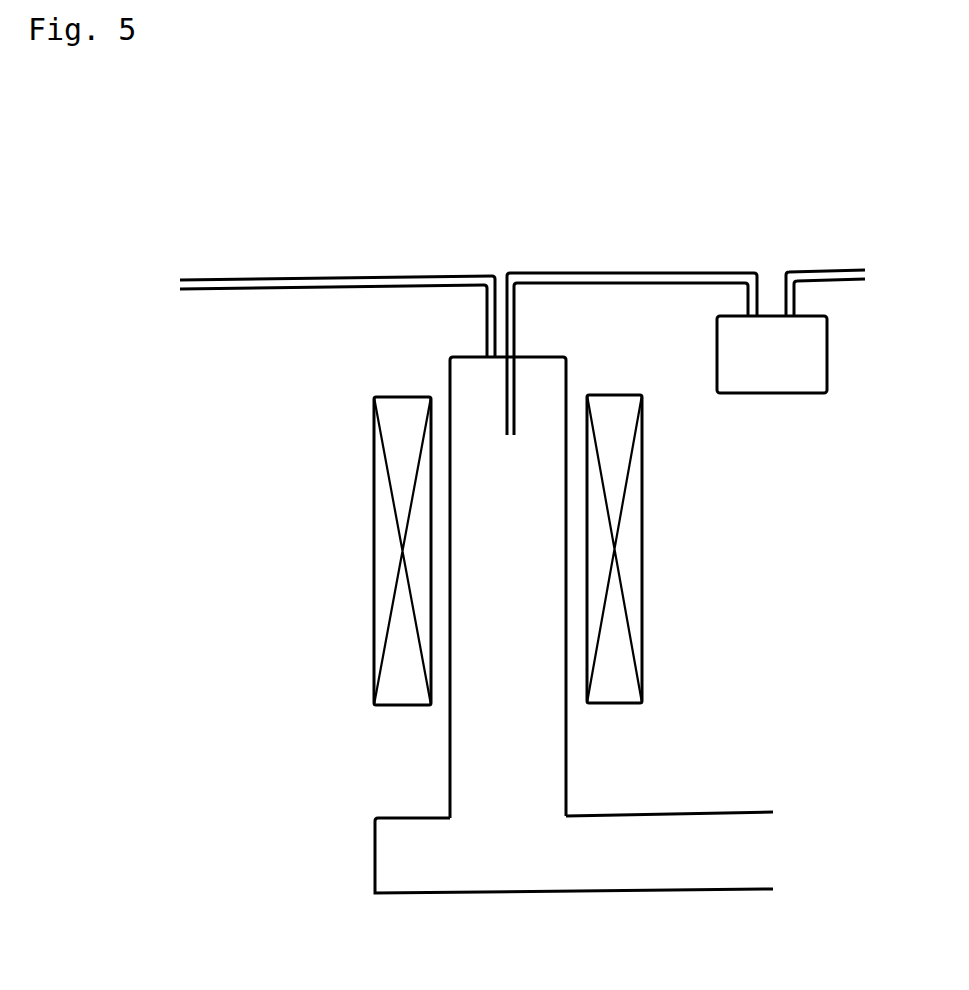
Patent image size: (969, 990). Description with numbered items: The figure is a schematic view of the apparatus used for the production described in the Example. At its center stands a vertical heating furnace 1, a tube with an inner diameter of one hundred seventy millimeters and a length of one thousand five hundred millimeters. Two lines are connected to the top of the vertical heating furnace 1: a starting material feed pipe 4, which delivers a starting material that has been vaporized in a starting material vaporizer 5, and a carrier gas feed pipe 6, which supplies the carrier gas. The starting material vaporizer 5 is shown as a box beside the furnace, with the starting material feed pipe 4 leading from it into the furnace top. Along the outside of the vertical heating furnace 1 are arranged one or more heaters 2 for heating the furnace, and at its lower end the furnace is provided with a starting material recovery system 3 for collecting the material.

The vertical heating furnace 1 is at (455, 372).
The heater 2 is at (383, 522).
The starting material recovery system 3 is at (617, 880).
The starting material feed pipe 4 is at (838, 277).
The starting material vaporizer 5 is at (806, 385).
The carrier gas feed pipe 6 is at (327, 305).